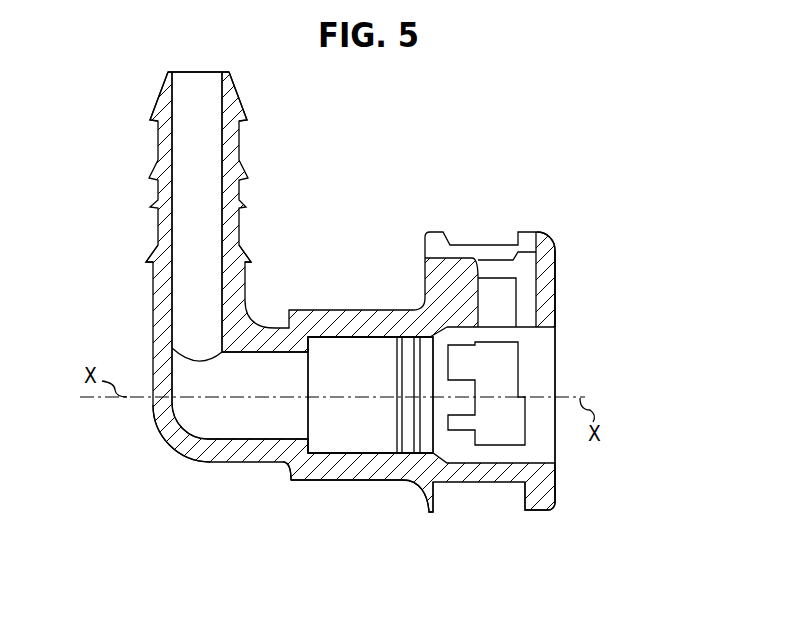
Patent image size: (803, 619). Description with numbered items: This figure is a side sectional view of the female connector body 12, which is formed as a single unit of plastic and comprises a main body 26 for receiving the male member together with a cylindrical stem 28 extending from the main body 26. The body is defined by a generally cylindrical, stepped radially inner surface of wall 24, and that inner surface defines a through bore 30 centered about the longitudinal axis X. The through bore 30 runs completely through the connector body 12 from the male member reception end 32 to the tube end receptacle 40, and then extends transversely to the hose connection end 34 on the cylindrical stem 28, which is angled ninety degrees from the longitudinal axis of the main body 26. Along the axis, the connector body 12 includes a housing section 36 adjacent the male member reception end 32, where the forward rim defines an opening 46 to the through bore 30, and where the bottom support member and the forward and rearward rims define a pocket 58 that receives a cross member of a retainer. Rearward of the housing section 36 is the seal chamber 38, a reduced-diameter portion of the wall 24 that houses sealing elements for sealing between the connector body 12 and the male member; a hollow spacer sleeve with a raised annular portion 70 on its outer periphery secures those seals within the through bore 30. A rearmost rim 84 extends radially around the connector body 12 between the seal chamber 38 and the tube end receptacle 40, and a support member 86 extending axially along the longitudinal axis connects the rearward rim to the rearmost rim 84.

The female connector body 12 is at (425, 186).
The wall 24 is at (358, 344).
The main body 26 is at (385, 492).
The cylindrical stem 28 is at (154, 247).
The through bore 30 is at (230, 422).
The male member reception end 32 is at (565, 256).
The hose connection end 34 is at (160, 92).
The housing section 36 is at (473, 453).
The seal chamber 38 is at (350, 440).
The tube end receptacle 40 is at (213, 462).
The opening 46 is at (558, 364).
The pocket 58 is at (503, 500).
The raised annular portion 70 is at (213, 176).
The rearmost rim 84 is at (287, 468).
The support member 86 is at (320, 480).